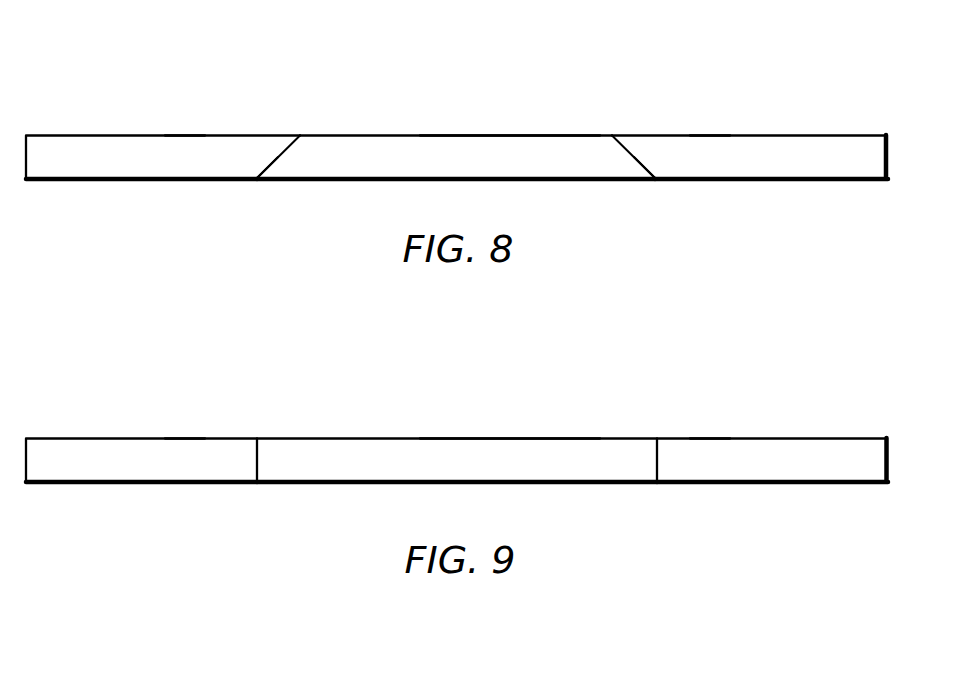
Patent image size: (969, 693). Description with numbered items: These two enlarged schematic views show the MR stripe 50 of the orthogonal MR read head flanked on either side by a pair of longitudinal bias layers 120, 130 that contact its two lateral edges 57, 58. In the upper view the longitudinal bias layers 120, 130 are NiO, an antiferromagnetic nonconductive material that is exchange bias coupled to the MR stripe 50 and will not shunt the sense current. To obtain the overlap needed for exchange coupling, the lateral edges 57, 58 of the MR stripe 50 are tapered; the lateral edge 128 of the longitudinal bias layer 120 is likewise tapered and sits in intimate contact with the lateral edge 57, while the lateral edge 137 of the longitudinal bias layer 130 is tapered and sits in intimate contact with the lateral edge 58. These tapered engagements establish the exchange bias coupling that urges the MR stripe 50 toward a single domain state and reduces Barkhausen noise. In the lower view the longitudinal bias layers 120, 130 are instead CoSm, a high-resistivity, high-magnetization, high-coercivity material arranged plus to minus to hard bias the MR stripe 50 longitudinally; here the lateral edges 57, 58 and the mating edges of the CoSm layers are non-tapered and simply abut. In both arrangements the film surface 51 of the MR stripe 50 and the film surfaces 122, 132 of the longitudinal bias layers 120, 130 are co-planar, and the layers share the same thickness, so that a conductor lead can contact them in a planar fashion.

In FIG. 8, the film surface of longitudinal bias layer 132 is at (143, 134).
In FIG. 9, the film surface of longitudinal bias layer 132 is at (143, 437).
In FIG. 8, the longitudinal bias layer 130 is at (183, 109).
In FIG. 9, the longitudinal bias layer 130 is at (183, 413).
In FIG. 8, the lateral edge of MR stripe 58 is at (283, 188).
In FIG. 8, the MR stripe 50 is at (392, 109).
In FIG. 9, the MR stripe 50 is at (392, 413).
In FIG. 8, the film surface of MR stripe 51 is at (546, 134).
In FIG. 9, the film surface of MR stripe 51 is at (547, 437).
In FIG. 8, the lateral edge of MR stripe 57 is at (628, 188).
In FIG. 8, the longitudinal bias layer 120 is at (712, 109).
In FIG. 9, the longitudinal bias layer 120 is at (712, 413).
In FIG. 8, the film surface of longitudinal bias layer 122 is at (746, 134).
In FIG. 9, the film surface of longitudinal bias layer 122 is at (793, 437).
In FIG. 8, the lateral edge of longitudinal bias layer 137 is at (283, 188).
In FIG. 8, the lateral edge of longitudinal bias layer 128 is at (628, 188).